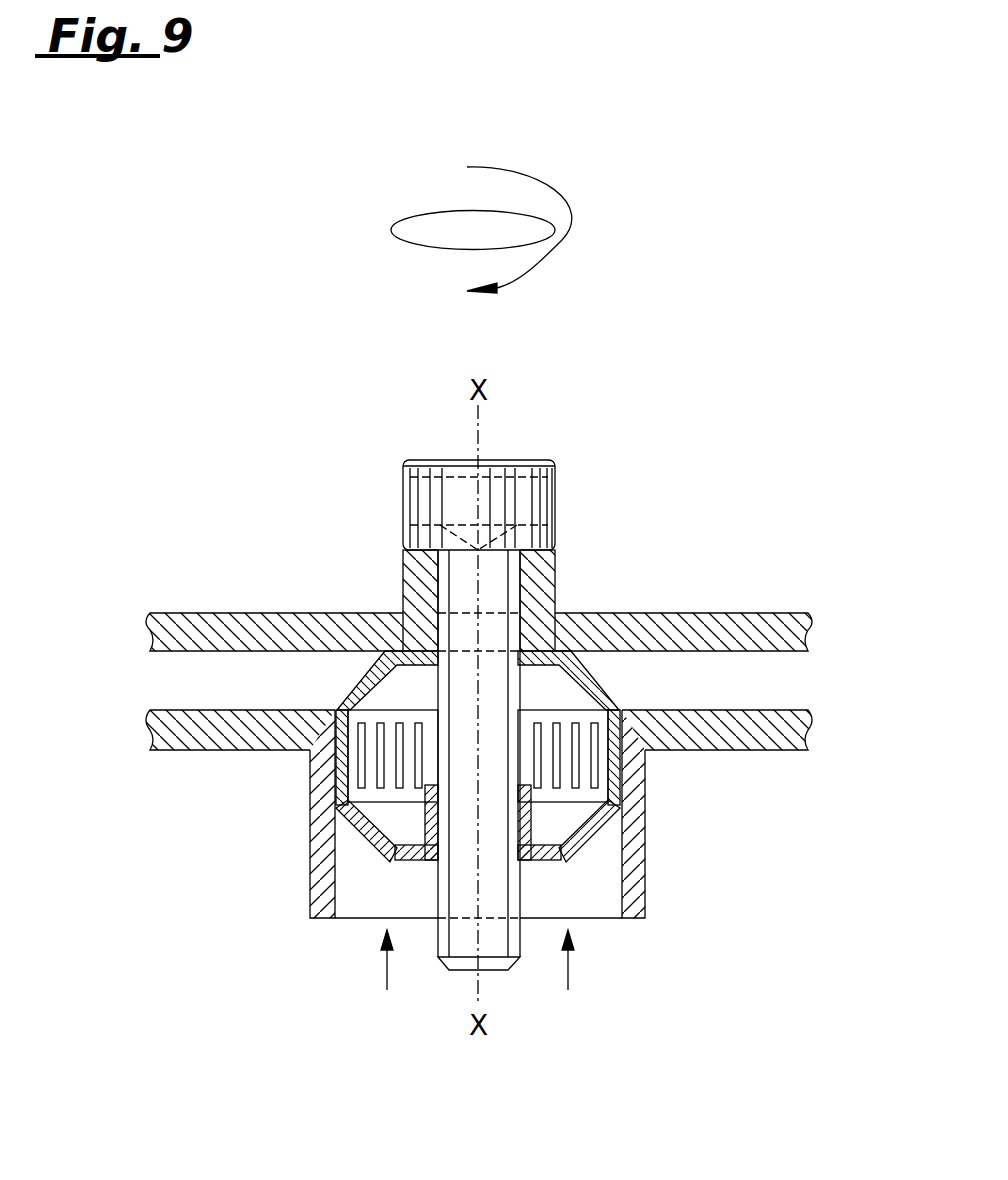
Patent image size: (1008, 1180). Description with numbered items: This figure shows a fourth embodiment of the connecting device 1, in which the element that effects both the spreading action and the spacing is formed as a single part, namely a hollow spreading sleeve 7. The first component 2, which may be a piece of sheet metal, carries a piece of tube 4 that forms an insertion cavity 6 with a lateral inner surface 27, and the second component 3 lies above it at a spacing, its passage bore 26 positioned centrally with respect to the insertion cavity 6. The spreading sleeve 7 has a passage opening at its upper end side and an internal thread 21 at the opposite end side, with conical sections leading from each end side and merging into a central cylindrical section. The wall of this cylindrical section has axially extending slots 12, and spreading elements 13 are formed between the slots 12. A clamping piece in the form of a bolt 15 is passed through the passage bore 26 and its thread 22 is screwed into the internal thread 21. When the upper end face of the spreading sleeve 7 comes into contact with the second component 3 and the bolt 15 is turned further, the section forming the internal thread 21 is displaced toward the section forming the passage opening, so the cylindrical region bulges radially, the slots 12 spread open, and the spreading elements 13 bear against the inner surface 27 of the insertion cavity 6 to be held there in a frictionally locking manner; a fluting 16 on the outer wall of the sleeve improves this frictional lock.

The connecting device 1 is at (227, 486).
The first component 2 is at (790, 710).
The second component 3 is at (775, 612).
The piece of tube 4 is at (635, 833).
The insertion cavity 6 is at (578, 895).
The spreading sleeve 7 is at (618, 683).
The slots 12 is at (598, 767).
The spreading elements 13 is at (410, 740).
The bolt 15 is at (555, 462).
The fluting 16 is at (337, 788).
The internal thread 21 is at (510, 820).
The thread 22 is at (518, 600).
The passage bore 26 is at (435, 625).
The inner surface 27 is at (338, 874).